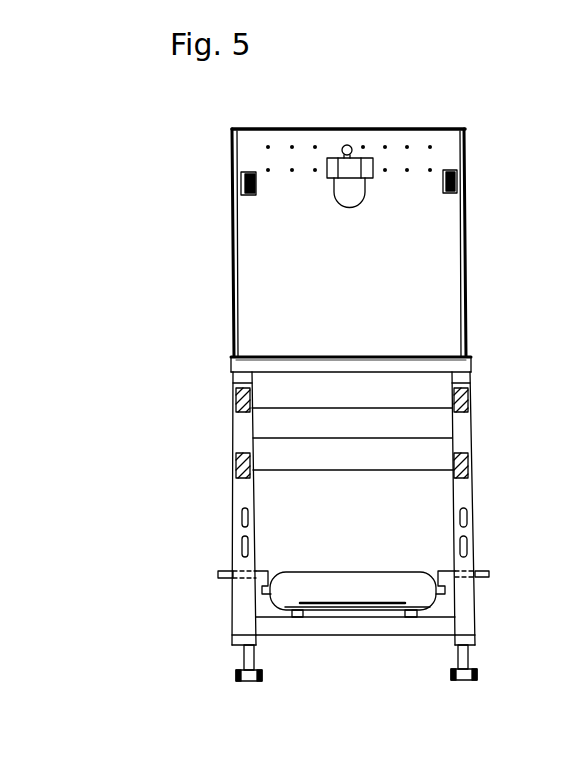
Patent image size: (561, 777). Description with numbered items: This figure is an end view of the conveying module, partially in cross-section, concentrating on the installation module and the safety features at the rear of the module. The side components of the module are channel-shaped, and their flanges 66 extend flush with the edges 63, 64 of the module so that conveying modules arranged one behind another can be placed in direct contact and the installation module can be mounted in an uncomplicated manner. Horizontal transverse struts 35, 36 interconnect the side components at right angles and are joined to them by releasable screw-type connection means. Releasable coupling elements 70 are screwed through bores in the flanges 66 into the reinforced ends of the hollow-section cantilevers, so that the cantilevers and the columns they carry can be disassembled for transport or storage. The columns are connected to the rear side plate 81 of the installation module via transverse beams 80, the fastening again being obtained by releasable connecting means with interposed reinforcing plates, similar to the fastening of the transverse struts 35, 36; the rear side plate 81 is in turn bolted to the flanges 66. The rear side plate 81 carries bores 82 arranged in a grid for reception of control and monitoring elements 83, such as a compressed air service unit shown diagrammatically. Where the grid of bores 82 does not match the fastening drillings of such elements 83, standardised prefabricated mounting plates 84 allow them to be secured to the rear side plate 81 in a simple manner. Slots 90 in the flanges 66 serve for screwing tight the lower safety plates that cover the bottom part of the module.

The transverse strut 35 is at (437, 424).
The transverse strut 36 is at (358, 624).
The edge 63 is at (229, 378).
The edge 64 is at (475, 366).
The flange 66 is at (245, 488).
The releasable coupling element 70 is at (469, 392).
The transverse beam 80 is at (240, 183).
The rear side plate 81 is at (318, 128).
The bore 82 is at (430, 146).
The control and monitoring element 83 is at (350, 168).
The mounting plate 84 is at (373, 168).
The slot 90 is at (466, 524).